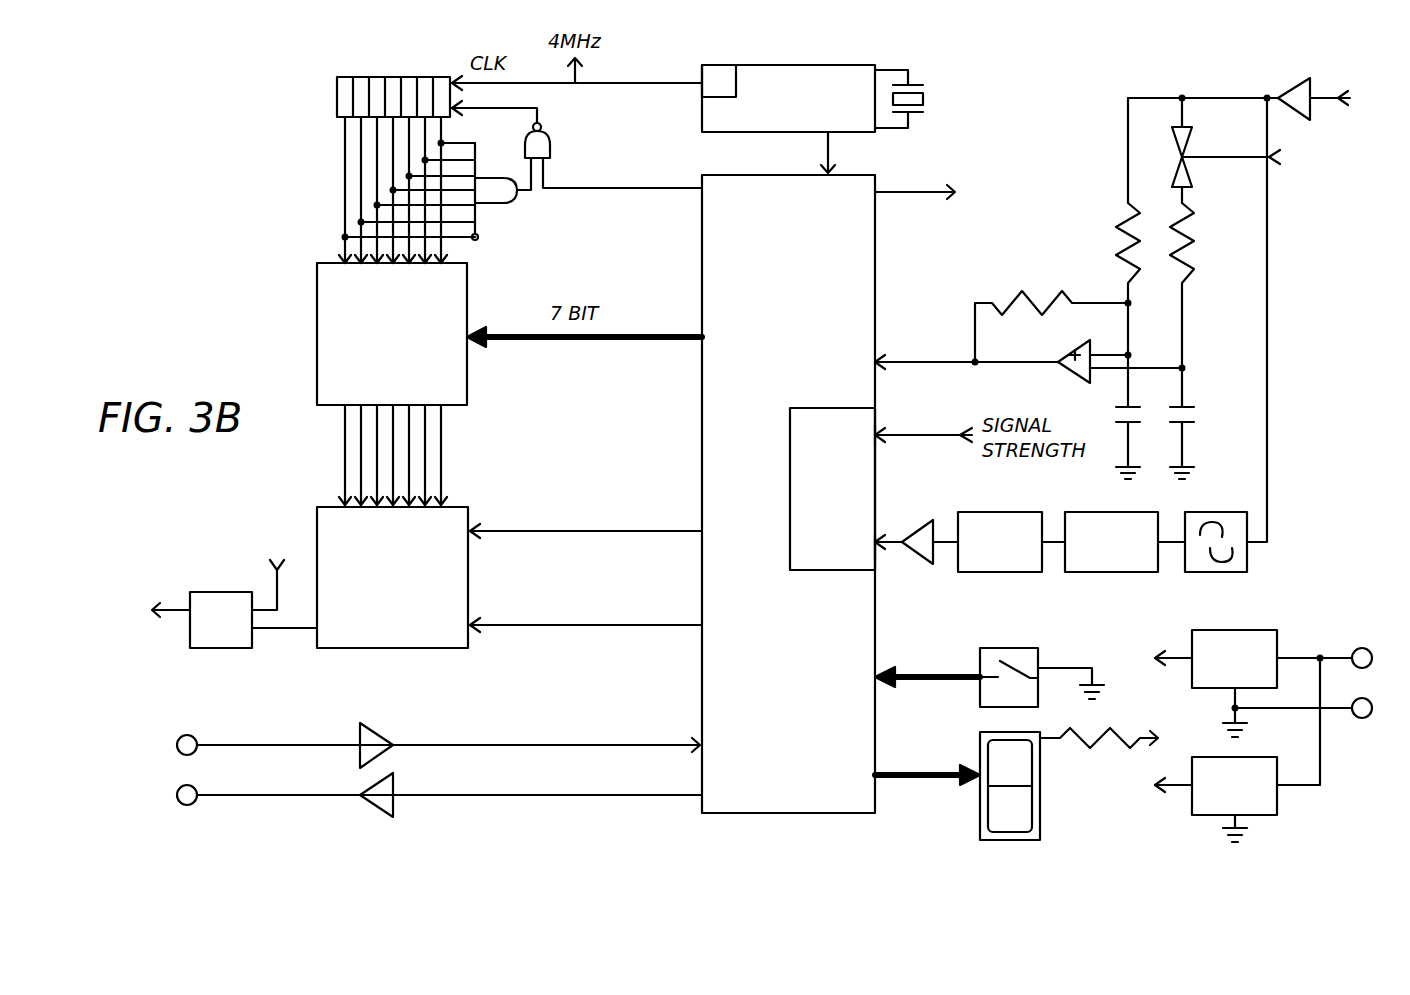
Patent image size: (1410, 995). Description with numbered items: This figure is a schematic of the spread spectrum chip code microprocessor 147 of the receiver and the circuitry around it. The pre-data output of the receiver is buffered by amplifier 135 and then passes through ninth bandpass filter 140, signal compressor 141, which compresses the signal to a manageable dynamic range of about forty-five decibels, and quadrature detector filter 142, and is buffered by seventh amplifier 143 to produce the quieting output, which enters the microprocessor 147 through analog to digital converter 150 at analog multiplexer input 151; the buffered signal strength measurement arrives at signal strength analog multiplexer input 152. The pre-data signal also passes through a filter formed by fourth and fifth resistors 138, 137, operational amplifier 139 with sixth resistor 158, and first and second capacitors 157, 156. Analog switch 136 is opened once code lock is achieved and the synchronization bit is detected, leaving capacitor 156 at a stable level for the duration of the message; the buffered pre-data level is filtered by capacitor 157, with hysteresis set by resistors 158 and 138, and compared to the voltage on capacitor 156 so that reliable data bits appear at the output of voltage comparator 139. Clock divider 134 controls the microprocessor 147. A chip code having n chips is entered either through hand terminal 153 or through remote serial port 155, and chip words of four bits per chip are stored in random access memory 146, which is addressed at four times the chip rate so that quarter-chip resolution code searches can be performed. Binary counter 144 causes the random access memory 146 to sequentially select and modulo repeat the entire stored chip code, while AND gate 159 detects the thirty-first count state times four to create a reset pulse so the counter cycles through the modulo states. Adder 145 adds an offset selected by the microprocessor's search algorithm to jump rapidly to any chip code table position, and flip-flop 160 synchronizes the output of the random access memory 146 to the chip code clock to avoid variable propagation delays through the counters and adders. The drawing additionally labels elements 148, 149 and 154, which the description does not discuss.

The clock divider 134 is at (742, 65).
The amplifier 135 is at (1298, 82).
The analog switch 136 is at (1192, 131).
The fifth resistor 137 is at (1190, 222).
The fourth resistor 138 is at (1125, 246).
The operational amplifier 139 is at (1072, 376).
The ninth bandpass filter 140 is at (1222, 574).
The signal compressor 141 is at (1105, 574).
The quadrature detector filter 142 is at (990, 512).
The seventh amplifier 143 is at (925, 565).
The binary counter 144 is at (340, 78).
The adder 145 is at (318, 264).
The random access memory 146 is at (318, 508).
The microprocessor 147 is at (742, 176).
The 12V filter 148 is at (1228, 630).
The 5V regulator 149 is at (1245, 757).
The analog to digital converter 150 is at (805, 408).
The analog multiplexer input 151 is at (877, 560).
The signal strength analog multiplexer input 152 is at (877, 425).
The hand terminal 153 is at (975, 700).
The seven segment display 154 is at (978, 812).
The remote serial port 155 is at (192, 805).
The second capacitor 156 is at (1195, 408).
The first capacitor 157 is at (1118, 416).
The sixth resistor 158 is at (1047, 290).
The AND gate 159 is at (480, 205).
The flip-flop 160 is at (228, 648).